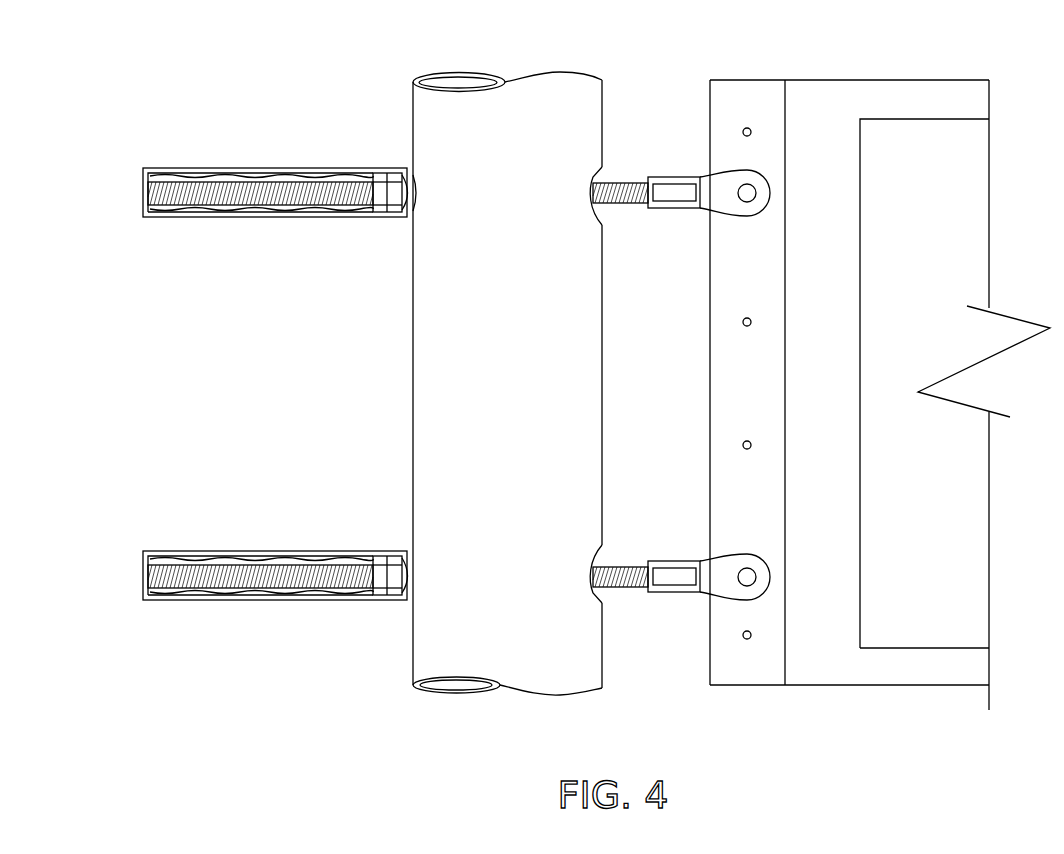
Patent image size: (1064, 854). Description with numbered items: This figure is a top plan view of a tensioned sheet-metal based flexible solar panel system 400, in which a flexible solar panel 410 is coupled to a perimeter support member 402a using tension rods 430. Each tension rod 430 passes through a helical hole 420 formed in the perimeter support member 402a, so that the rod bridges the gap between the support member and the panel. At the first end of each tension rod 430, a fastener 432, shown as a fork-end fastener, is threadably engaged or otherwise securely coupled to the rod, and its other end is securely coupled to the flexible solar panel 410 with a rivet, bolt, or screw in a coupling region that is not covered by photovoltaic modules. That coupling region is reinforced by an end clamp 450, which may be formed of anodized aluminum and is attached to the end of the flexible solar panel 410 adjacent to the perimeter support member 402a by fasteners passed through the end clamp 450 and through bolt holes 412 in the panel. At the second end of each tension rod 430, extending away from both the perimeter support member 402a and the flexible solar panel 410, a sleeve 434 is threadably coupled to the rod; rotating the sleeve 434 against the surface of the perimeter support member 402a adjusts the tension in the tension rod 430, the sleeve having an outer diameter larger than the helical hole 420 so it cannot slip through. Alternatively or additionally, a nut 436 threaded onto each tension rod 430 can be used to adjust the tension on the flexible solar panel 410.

The tensioned sheet-metal based flexible solar panel system 400 is at (233, 102).
The perimeter support member 402a is at (422, 433).
The flexible solar panel 410 is at (850, 97).
The bolt holes 412 is at (767, 660).
The helical holes 420 is at (418, 178).
The tension rods 430 is at (618, 183).
The fasteners 432 is at (738, 590).
The sleeves 434 is at (200, 218).
The nuts 436 is at (397, 178).
The end clamp 450 is at (750, 97).